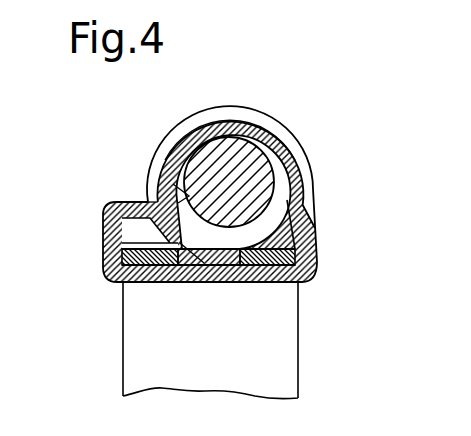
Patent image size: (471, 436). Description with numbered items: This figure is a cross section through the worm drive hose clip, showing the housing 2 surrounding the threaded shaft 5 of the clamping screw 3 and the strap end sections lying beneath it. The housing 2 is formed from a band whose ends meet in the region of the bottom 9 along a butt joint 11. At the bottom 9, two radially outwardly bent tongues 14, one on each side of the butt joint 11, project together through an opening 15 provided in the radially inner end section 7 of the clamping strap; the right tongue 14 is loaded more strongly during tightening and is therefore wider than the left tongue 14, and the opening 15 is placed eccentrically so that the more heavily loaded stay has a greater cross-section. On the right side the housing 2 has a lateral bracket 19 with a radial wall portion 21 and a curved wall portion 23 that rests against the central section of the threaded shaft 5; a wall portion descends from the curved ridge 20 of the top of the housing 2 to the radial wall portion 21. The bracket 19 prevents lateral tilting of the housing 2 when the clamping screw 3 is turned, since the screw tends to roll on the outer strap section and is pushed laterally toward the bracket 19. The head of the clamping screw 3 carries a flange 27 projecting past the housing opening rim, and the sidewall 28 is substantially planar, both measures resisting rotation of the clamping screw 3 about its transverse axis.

The housing 2 is at (130, 185).
The clamping screw 3 is at (263, 109).
The threaded shaft 5 is at (260, 181).
The radially inner end section 7 is at (298, 343).
The bottom 9 is at (152, 282).
The butt joint 11 is at (215, 270).
The tongues 14 is at (122, 244).
The opening 15 is at (189, 266).
The lateral bracket 19 is at (106, 207).
The curved ridge 20 is at (223, 122).
The radial wall portion 21 is at (103, 225).
The curved wall portion 23 is at (163, 155).
The flange 27 is at (290, 138).
The sidewall 28 is at (309, 189).